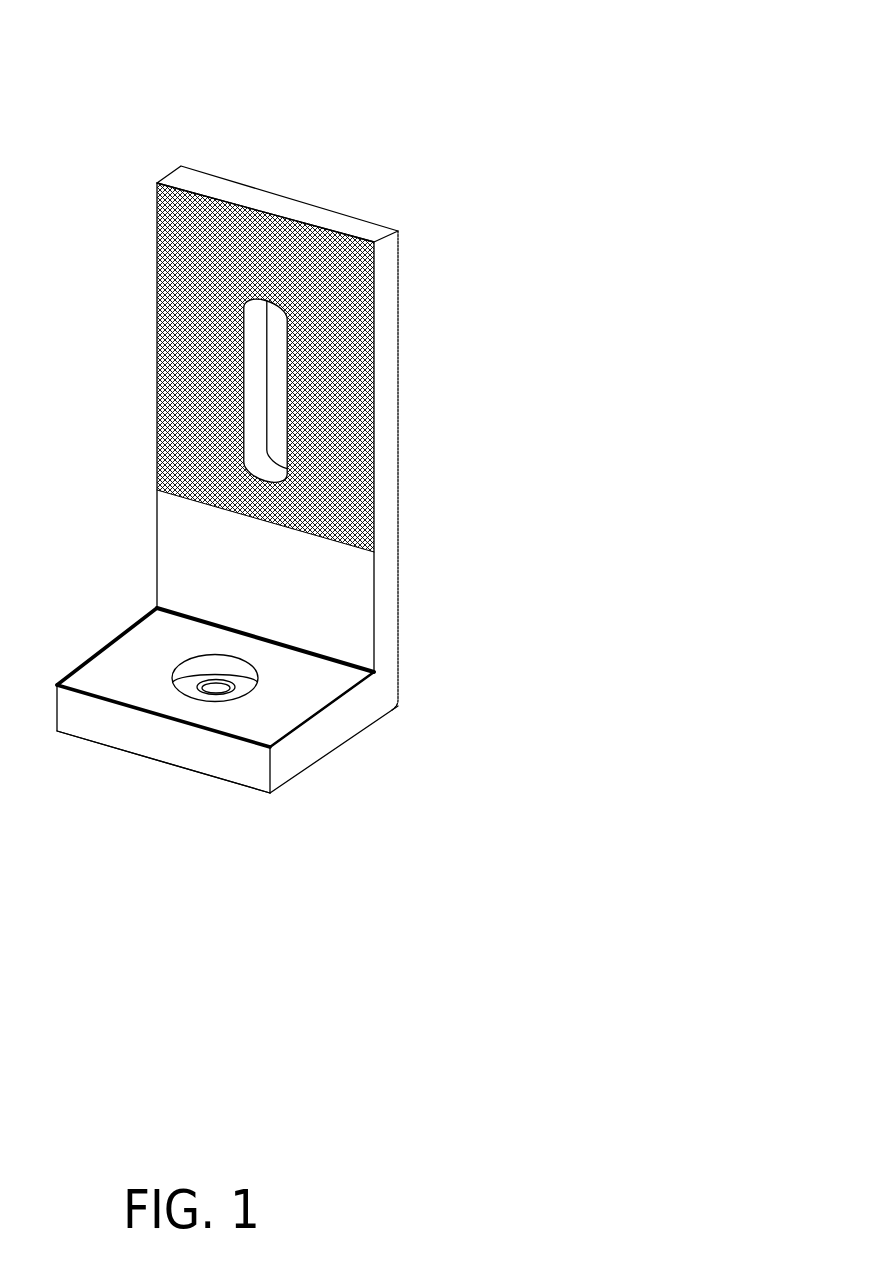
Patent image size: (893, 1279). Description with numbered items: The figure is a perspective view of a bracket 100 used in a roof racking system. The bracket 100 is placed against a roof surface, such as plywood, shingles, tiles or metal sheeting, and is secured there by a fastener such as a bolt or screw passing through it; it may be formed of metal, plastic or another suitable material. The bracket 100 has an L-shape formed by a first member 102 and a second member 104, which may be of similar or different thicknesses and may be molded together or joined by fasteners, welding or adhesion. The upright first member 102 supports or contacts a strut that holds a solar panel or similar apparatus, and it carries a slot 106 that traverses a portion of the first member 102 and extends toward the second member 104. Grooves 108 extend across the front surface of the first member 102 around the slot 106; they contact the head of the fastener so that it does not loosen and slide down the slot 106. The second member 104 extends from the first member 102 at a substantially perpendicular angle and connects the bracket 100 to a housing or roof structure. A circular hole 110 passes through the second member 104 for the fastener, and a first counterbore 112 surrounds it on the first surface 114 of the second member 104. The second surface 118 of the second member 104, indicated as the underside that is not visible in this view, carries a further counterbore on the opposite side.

The bracket 100 is at (304, 408).
The first member 102 is at (319, 438).
The second member 104 is at (255, 697).
The slot 106 is at (275, 415).
The grooves 108 is at (347, 297).
The hole 110 is at (220, 692).
The first counterbore 112 is at (183, 668).
The first surface 114 is at (172, 627).
The second surface 118 is at (356, 750).